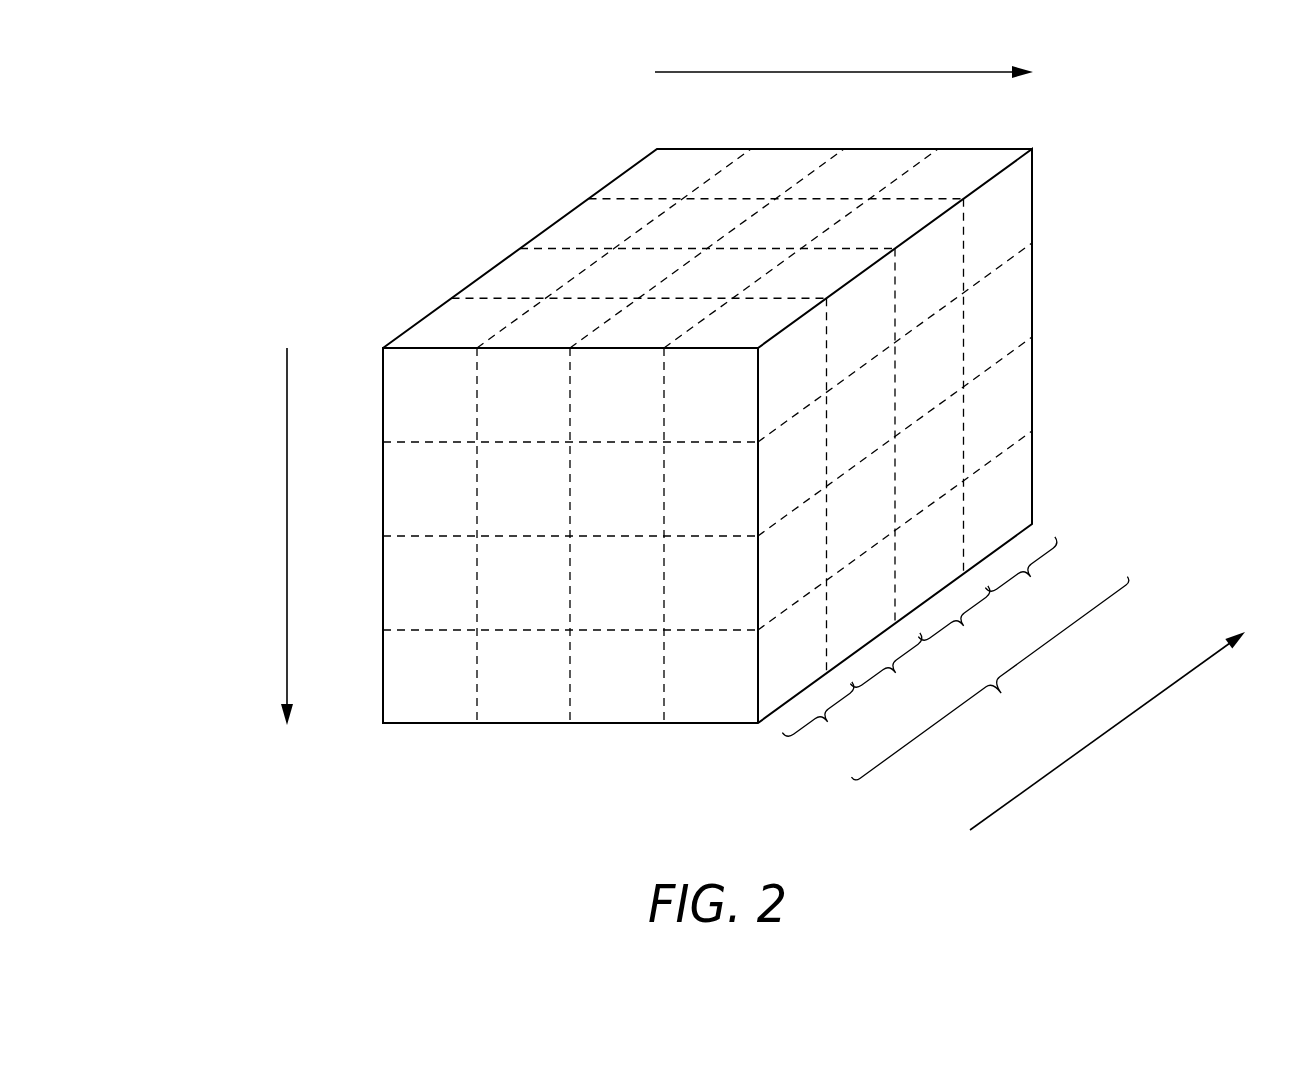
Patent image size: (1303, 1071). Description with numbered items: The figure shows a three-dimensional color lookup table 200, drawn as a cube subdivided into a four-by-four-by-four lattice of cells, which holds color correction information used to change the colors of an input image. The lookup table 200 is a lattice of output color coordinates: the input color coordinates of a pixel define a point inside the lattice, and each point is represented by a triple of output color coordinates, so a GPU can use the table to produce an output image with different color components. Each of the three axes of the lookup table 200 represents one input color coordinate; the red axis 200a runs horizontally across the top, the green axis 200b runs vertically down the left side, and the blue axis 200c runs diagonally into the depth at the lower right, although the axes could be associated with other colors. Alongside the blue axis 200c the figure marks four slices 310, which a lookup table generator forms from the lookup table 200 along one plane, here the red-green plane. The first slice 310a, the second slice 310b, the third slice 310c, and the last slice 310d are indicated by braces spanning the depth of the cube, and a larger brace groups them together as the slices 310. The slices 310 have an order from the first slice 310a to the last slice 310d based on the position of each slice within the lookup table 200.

The three-dimensional color lookup table 200 is at (288, 172).
The red axis 200a is at (807, 72).
The green axis 200b is at (287, 593).
The blue axis 200c is at (1022, 792).
The slices 310 is at (995, 685).
The first slice 310a is at (838, 716).
The second slice 310b is at (904, 666).
The third slice 310c is at (972, 619).
The last slice 310d is at (1039, 570).